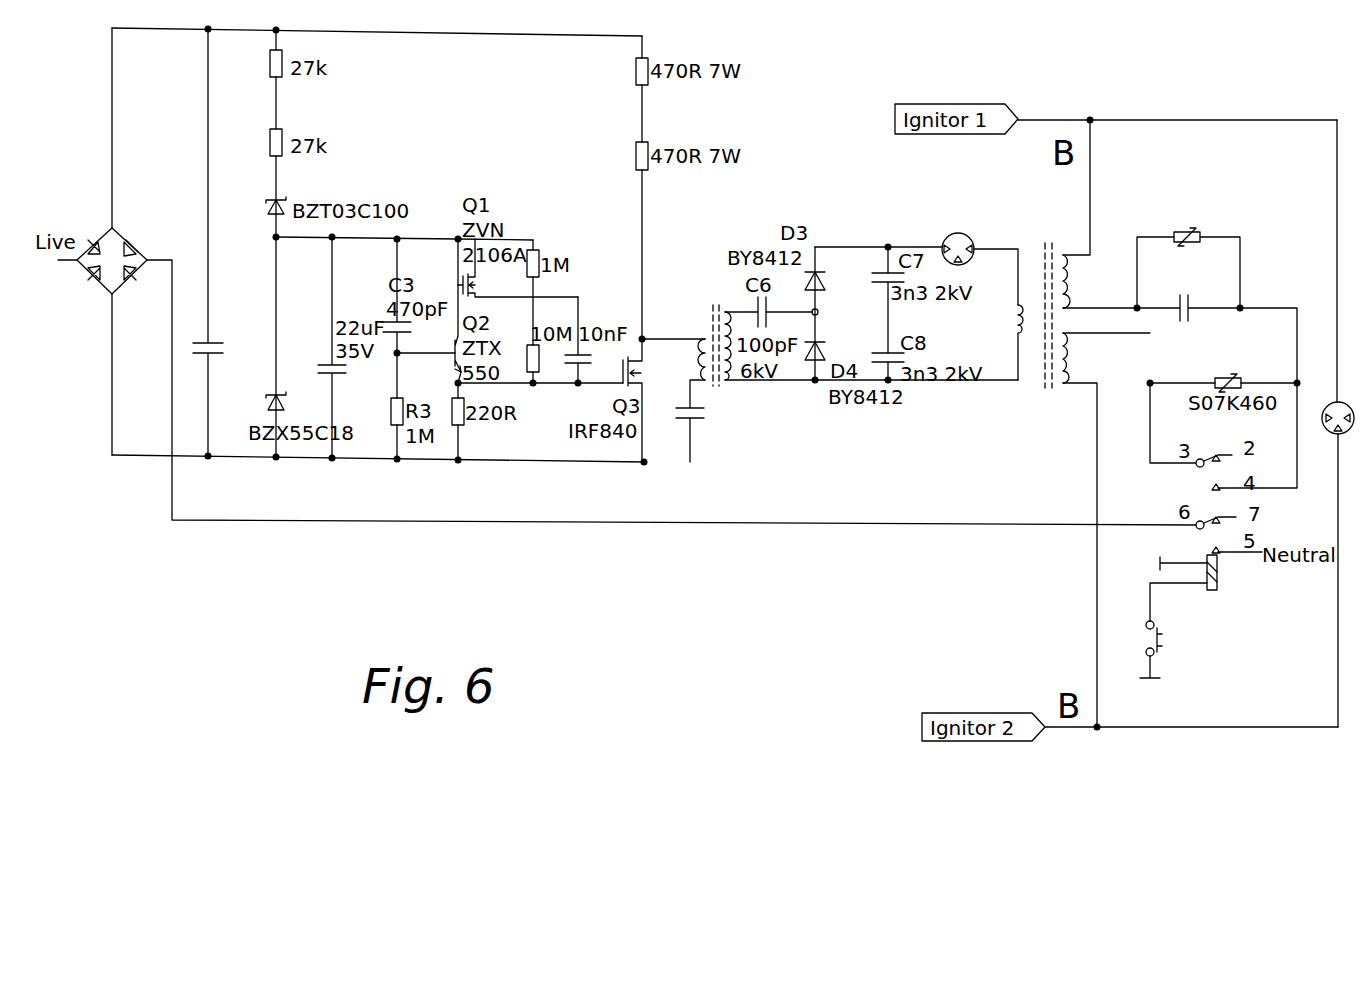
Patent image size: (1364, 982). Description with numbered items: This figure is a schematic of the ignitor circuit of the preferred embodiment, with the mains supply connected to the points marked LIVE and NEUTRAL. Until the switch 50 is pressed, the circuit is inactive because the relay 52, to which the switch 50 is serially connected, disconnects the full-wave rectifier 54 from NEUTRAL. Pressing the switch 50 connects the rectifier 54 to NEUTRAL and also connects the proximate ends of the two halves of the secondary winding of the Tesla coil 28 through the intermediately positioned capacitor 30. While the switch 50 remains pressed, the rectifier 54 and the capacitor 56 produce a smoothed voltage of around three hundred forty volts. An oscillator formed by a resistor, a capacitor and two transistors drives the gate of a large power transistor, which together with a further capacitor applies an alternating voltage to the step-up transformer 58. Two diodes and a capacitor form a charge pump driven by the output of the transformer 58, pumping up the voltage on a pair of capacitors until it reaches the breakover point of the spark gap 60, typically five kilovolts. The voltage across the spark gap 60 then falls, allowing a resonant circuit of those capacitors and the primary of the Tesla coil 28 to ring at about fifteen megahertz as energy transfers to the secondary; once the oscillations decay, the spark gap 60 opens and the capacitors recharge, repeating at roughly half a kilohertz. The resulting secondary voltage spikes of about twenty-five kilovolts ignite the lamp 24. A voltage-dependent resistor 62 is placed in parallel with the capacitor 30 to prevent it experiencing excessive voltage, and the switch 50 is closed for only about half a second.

The full-wave rectifier 54 is at (122, 216).
The capacitor 56 is at (214, 338).
The step-up transformer 58 is at (712, 312).
The spark gap 60 is at (948, 237).
The Tesla coil 28 is at (1046, 248).
The voltage-dependent resistor 62 is at (1190, 232).
The capacitor 30 is at (1200, 305).
The lamp 24 is at (1336, 402).
The relay 52 is at (1216, 600).
The switch 50 is at (1163, 640).